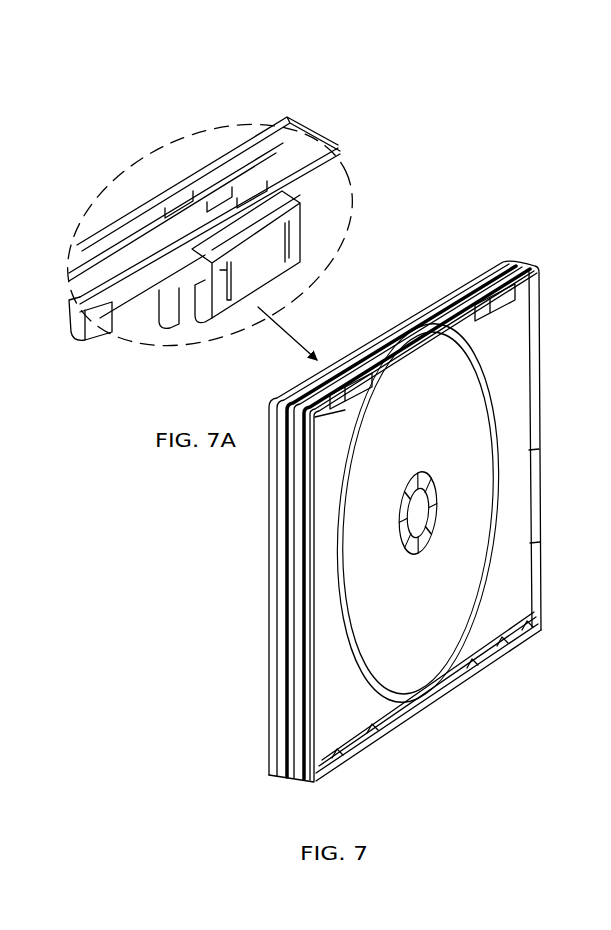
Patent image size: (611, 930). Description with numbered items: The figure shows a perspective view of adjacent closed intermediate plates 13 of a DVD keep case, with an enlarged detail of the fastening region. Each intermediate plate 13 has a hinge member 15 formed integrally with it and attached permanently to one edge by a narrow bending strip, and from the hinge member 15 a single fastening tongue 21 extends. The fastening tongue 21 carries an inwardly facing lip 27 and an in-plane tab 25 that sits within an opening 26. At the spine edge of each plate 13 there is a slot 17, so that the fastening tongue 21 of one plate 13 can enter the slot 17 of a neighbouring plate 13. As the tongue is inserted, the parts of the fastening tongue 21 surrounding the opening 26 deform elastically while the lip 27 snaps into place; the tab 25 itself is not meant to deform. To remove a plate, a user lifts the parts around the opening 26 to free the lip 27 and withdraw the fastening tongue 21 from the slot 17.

In FIG. 7, the intermediate plate 13 is at (530, 255).
In FIG. 7A, the hinge member 15 is at (238, 238).
In FIG. 7, the slot 17 is at (473, 277).
In FIG. 7A, the fastening tongue 21 is at (295, 240).
In FIG. 7A, the in-plane tab 25 is at (263, 257).
In FIG. 7A, the opening 26 is at (227, 262).
In FIG. 7A, the inwardly facing lip 27 is at (203, 293).